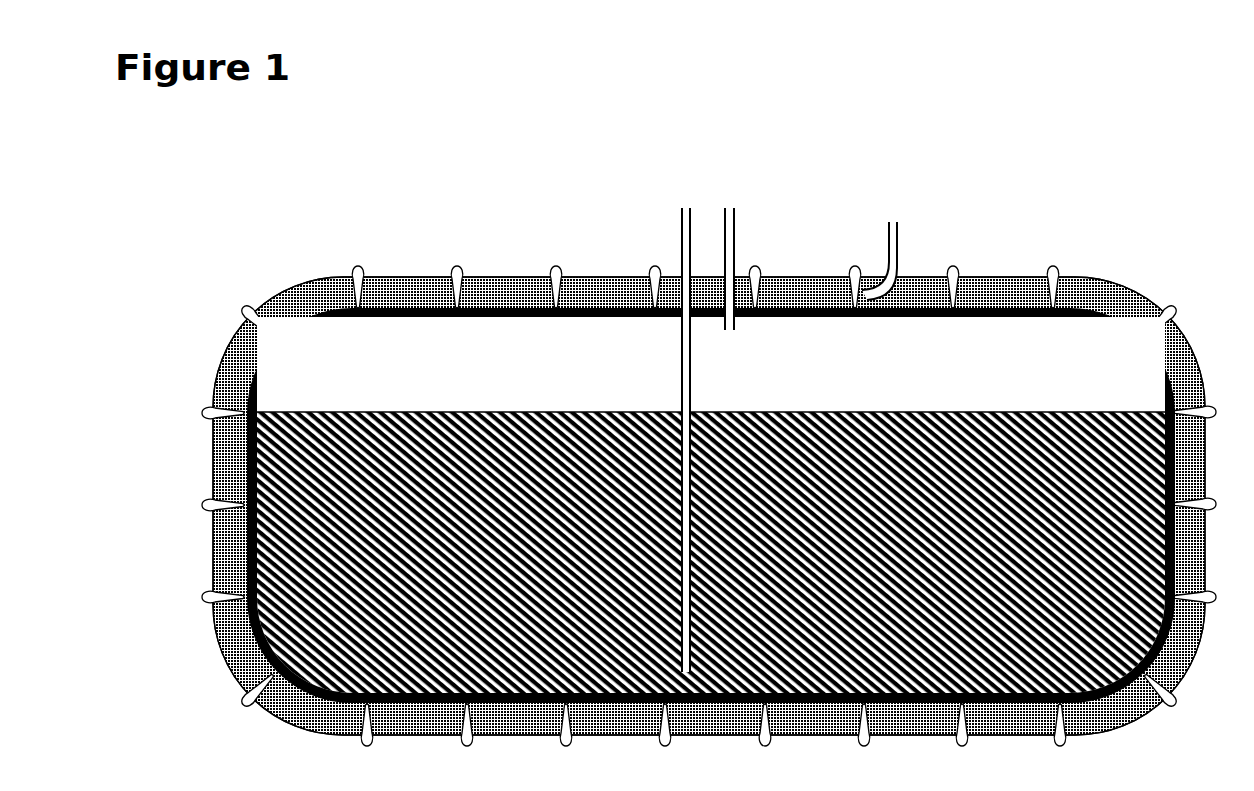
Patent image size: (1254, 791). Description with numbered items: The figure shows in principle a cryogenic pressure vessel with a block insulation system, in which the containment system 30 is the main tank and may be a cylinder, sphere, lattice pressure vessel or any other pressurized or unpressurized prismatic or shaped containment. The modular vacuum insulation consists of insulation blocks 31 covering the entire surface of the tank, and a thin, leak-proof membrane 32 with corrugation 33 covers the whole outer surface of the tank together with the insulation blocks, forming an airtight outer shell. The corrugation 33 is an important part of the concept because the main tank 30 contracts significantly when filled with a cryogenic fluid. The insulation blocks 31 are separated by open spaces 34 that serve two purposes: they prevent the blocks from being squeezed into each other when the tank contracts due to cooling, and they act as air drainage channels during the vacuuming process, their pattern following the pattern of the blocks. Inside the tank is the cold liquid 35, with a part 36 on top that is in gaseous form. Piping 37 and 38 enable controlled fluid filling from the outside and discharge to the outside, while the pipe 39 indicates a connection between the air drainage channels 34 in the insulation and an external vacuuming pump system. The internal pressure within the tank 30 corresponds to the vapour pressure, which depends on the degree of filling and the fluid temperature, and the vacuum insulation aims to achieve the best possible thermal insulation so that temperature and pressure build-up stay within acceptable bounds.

The containment system 30 is at (465, 317).
The insulation blocks 31 is at (597, 297).
The membrane 32 is at (393, 277).
The corrugation 33 is at (457, 277).
The open spaces 34 is at (952, 282).
The cold liquid 35 is at (815, 462).
The part in gaseous form 36 is at (1067, 385).
The piping 37 is at (681, 243).
The piping 38 is at (735, 235).
The pipe 39 is at (897, 237).